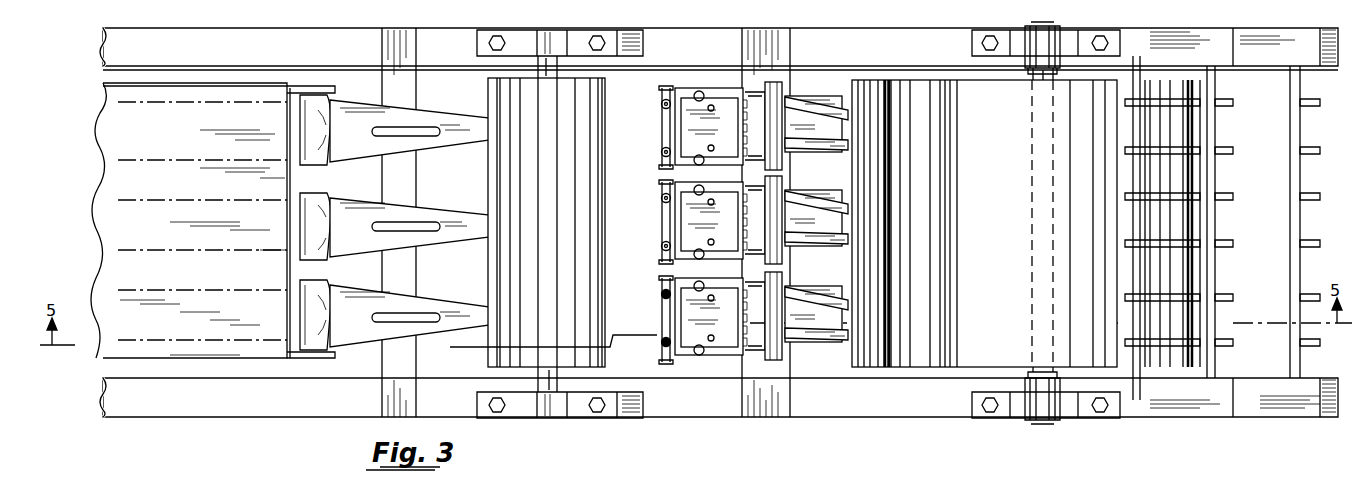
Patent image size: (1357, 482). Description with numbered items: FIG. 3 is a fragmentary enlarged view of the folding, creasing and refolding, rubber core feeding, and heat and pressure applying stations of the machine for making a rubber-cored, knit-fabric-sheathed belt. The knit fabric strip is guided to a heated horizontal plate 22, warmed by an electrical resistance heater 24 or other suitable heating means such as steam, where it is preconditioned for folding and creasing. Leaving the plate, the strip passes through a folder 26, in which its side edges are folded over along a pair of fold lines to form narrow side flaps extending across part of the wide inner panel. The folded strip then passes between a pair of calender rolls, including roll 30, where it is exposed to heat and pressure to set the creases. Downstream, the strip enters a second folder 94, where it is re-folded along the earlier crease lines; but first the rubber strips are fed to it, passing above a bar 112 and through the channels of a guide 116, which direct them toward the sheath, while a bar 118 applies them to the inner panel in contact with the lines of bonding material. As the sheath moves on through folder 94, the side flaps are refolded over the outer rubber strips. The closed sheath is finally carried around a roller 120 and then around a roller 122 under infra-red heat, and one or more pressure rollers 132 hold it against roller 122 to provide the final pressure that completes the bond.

The heated horizontal plate 22 is at (180, 350).
The electrical resistance heater 24 is at (310, 360).
The folder 26 is at (474, 152).
The calender roll 30 is at (530, 257).
The folder 94 is at (830, 104).
The bar 112 is at (662, 136).
The guide 116 is at (688, 147).
The bar 118 is at (770, 96).
The roller 120 is at (881, 355).
The roller 122 is at (951, 355).
The pressure rollers 132 is at (1208, 286).